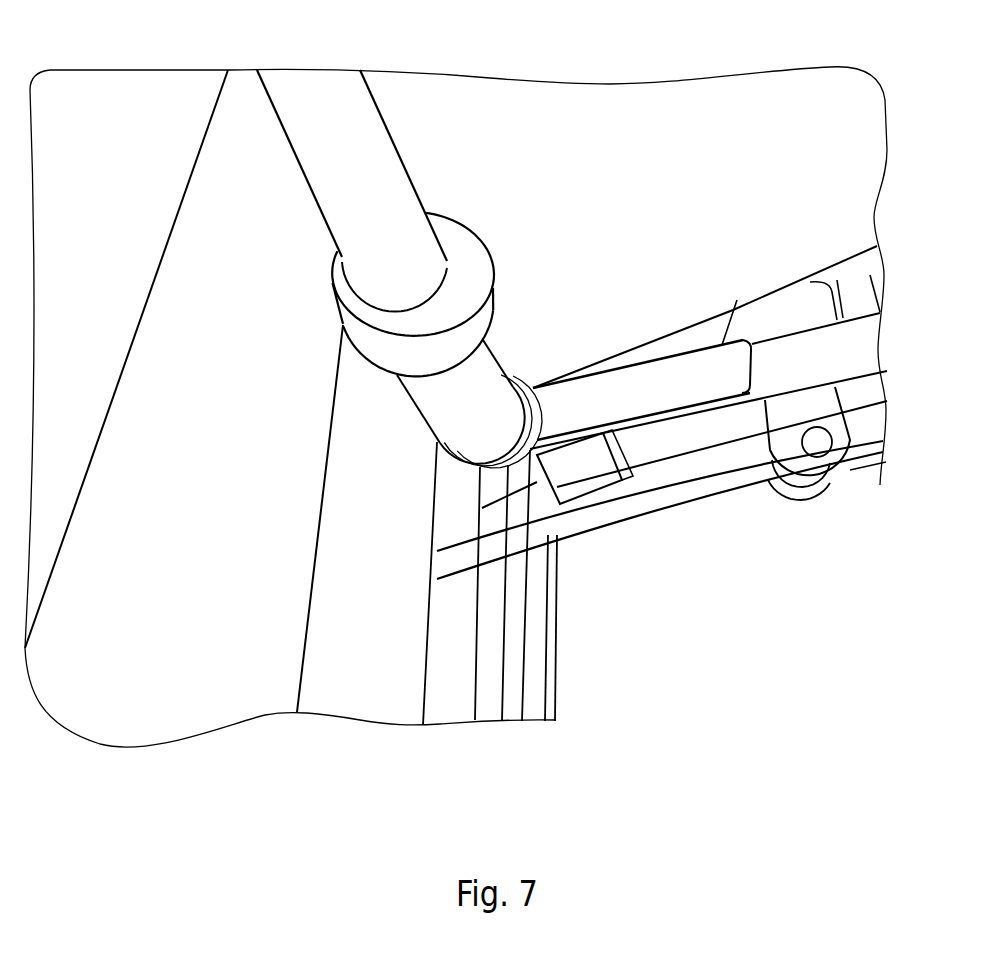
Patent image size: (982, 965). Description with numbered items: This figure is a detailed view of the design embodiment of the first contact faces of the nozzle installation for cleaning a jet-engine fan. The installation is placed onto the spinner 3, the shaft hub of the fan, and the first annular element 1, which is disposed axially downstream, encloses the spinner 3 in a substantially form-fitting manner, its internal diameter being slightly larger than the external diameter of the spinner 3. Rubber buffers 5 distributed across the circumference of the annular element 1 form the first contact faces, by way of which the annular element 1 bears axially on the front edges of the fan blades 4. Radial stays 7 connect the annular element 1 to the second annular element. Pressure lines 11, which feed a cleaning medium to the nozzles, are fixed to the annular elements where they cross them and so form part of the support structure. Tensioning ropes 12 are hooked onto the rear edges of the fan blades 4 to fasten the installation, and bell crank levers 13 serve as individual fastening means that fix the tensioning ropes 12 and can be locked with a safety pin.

The annular element 1 is at (363, 148).
The spinner 3 is at (688, 177).
The fan blades 4 is at (308, 643).
The rubber buffers 5 is at (483, 295).
The radial stays 7 is at (636, 378).
The pressure lines 11 is at (673, 433).
The tensioning ropes 12 is at (613, 508).
The bell crank levers 13 is at (862, 440).